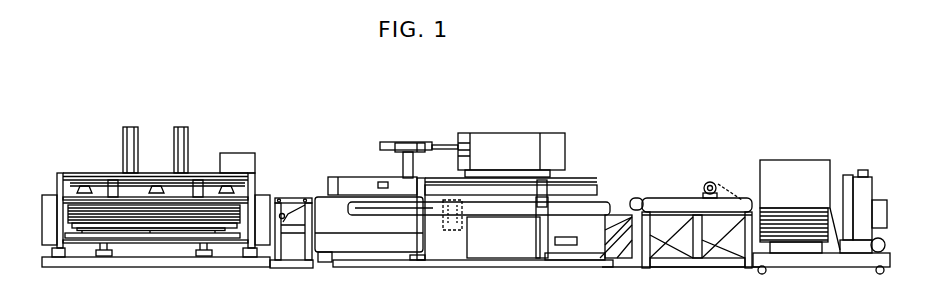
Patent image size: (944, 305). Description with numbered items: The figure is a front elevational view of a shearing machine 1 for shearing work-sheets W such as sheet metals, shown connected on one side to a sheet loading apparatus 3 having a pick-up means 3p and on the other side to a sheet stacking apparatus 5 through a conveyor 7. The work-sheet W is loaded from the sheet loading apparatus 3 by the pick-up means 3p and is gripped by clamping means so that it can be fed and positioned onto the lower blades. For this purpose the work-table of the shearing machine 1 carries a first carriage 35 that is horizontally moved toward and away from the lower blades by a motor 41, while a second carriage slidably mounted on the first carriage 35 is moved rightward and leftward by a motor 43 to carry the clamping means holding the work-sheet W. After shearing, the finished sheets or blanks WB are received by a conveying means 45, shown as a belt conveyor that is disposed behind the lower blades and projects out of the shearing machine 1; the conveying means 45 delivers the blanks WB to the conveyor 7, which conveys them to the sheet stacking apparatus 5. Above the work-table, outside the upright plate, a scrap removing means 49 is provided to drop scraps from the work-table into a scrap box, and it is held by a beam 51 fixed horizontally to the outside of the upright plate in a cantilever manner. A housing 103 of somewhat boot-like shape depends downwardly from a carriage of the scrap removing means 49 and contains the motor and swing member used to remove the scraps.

The shearing machine 1 is at (540, 122).
The sheet loading apparatus 3 is at (212, 150).
The pick-up means 3p is at (80, 180).
The sheet stacking apparatus 5 is at (848, 169).
The conveyor 7 is at (668, 190).
The first carriage 35 is at (500, 190).
The motor 41 is at (470, 228).
The motor 43 is at (352, 183).
The conveying means 45 is at (627, 198).
The scrap removing means 49 is at (412, 136).
The beam 51 is at (447, 145).
The housing 103 is at (404, 170).
The work-sheet W is at (240, 193).
The blank WB is at (805, 210).